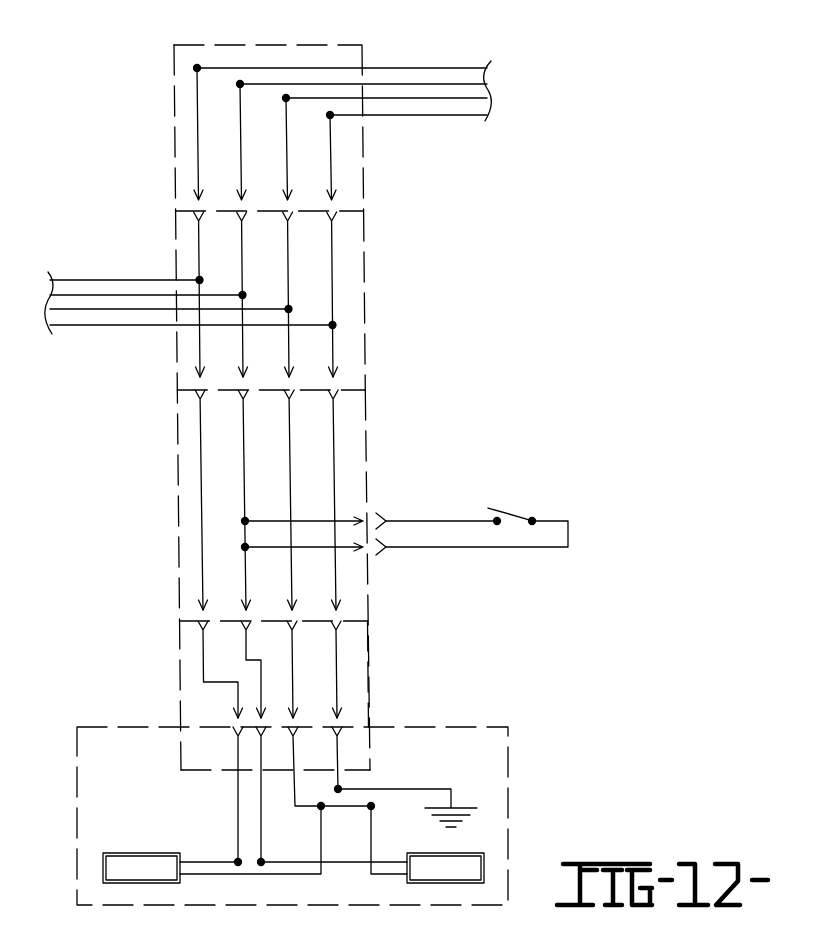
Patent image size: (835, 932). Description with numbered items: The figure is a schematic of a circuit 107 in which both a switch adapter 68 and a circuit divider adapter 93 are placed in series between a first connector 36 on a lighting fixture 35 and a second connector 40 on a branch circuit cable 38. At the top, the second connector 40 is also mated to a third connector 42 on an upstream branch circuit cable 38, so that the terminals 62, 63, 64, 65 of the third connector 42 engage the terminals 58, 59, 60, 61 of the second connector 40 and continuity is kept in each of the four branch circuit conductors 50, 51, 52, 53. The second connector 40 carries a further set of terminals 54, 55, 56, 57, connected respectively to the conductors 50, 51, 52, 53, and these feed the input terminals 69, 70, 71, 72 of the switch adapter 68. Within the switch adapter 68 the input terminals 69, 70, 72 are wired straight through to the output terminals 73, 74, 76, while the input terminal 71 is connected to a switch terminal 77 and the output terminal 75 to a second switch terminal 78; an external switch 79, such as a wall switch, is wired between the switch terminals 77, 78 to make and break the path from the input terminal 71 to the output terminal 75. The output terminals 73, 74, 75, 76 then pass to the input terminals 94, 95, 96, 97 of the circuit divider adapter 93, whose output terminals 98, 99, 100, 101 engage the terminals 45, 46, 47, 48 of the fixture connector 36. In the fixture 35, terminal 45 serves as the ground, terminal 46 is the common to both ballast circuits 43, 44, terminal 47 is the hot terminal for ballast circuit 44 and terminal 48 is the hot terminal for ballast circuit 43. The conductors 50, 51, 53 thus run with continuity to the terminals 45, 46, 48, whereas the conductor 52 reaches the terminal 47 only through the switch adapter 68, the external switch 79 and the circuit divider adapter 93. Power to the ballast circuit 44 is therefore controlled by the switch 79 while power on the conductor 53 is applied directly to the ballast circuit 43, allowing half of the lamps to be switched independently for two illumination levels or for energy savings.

The lighting fixture 35 is at (475, 725).
The fixture connector 36 is at (178, 764).
The branch circuit cable 38 is at (488, 63).
The second connector 40 is at (370, 283).
The third connector 42 is at (345, 44).
The ballast circuit 43 is at (128, 853).
The ballast circuit 44 is at (420, 853).
The terminal 45 is at (340, 735).
The terminal 46 is at (294, 737).
The terminal 47 is at (261, 737).
The terminal 48 is at (238, 736).
The conductor 50 is at (455, 116).
The conductor 51 is at (398, 99).
The conductor 52 is at (373, 83).
The conductor 53 is at (432, 68).
The terminal 54 is at (338, 378).
The terminal 55 is at (318, 355).
The terminal 56 is at (274, 355).
The terminal 57 is at (230, 355).
The terminal 58 is at (340, 219).
The terminal 59 is at (309, 294).
The terminal 60 is at (264, 294).
The terminal 61 is at (221, 294).
The terminal 62 is at (335, 202).
The terminal 63 is at (318, 178).
The terminal 64 is at (273, 182).
The terminal 65 is at (228, 182).
The switch adapter 68 is at (177, 459).
The input terminal 69 is at (338, 396).
The input terminal 70 is at (291, 398).
The input terminal 71 is at (240, 398).
The input terminal 72 is at (198, 396).
The output terminal 73 is at (338, 606).
The output terminal 74 is at (318, 590).
The output terminal 75 is at (272, 590).
The output terminal 76 is at (200, 606).
The switch terminal 77 is at (366, 515).
The second switch terminal 78 is at (367, 550).
The external switch 79 is at (505, 512).
The circuit divider adapter 93 is at (369, 666).
The input terminal 94 is at (340, 632).
The input terminal 95 is at (292, 632).
The input terminal 96 is at (247, 632).
The input terminal 97 is at (200, 632).
The output terminal 98 is at (362, 700).
The output terminal 99 is at (320, 700).
The output terminal 100 is at (285, 700).
The output terminal 101 is at (236, 716).
The circuit 107 is at (162, 61).